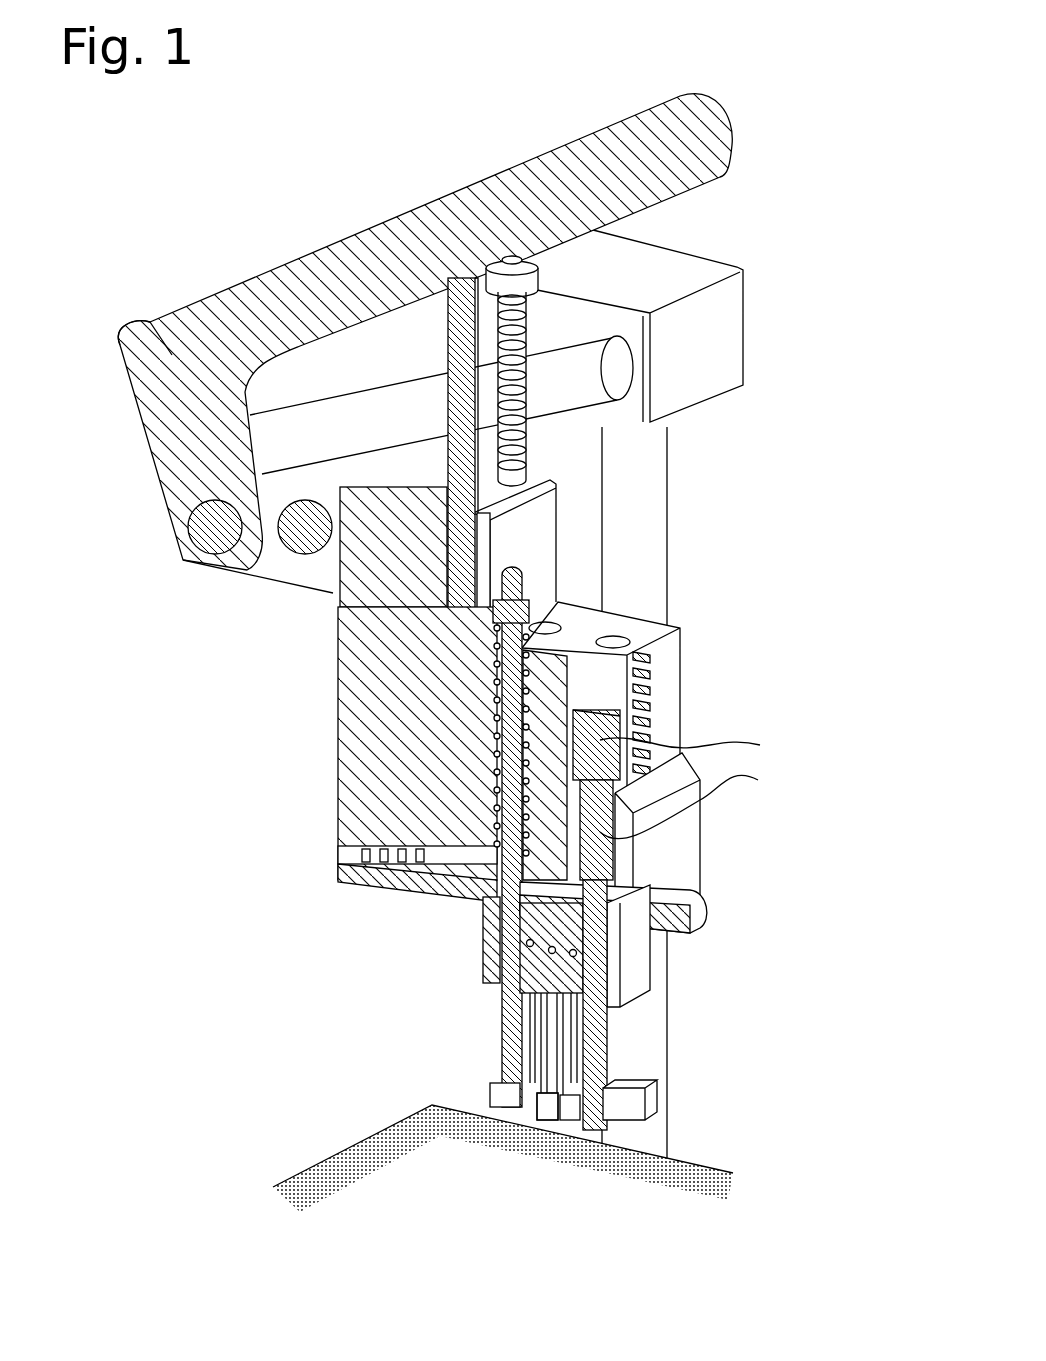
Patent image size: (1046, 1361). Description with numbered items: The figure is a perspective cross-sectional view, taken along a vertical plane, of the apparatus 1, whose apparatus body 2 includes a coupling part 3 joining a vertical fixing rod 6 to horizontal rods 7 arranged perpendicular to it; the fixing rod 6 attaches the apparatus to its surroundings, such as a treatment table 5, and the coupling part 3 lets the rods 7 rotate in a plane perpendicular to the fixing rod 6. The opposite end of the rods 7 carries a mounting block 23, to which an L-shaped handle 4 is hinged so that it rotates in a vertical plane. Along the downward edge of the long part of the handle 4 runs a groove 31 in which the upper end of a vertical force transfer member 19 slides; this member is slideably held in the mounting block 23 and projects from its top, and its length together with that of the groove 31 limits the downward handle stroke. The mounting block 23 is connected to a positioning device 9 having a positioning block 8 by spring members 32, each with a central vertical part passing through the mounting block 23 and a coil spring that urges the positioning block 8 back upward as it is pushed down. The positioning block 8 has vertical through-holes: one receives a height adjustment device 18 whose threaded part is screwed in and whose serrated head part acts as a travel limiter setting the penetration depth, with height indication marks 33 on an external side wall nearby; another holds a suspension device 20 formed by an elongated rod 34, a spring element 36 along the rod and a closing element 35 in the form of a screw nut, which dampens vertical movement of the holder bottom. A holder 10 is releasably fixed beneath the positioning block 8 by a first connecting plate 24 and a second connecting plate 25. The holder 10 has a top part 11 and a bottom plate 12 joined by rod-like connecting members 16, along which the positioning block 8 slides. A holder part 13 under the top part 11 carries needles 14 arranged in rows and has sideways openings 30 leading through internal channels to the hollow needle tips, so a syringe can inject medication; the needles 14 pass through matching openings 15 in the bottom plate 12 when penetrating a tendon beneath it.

The apparatus 1 is at (439, 363).
The apparatus body 2 is at (512, 814).
The coupling part 3 is at (697, 343).
The handle 4 is at (172, 355).
The treatment table 5 is at (342, 1170).
The fixing rod 6 is at (627, 483).
The horizontal rods 7 is at (330, 293).
The positioning block 8 is at (370, 808).
The positioning device 9 is at (694, 741).
The holder 10 is at (723, 885).
The top part 11 is at (708, 907).
The bottom plate 12 is at (623, 1117).
The holder part 13 is at (523, 962).
The needles 14 is at (520, 1083).
The openings 15 is at (552, 1108).
The connecting members 16 is at (600, 1052).
The height adjustment device 18 is at (600, 713).
The force transfer member 19 is at (455, 272).
The suspension device 20 is at (376, 837).
The mounting block 23 is at (362, 570).
The first connecting plate 24 is at (372, 850).
The second connecting plate 25 is at (362, 888).
The openings 30 is at (528, 943).
The groove 31 is at (378, 423).
The spring members 32 is at (527, 443).
The height indication marks 33 is at (650, 683).
The elongated rod 34 is at (523, 587).
The closing element 35 is at (515, 605).
The spring element 36 is at (494, 753).